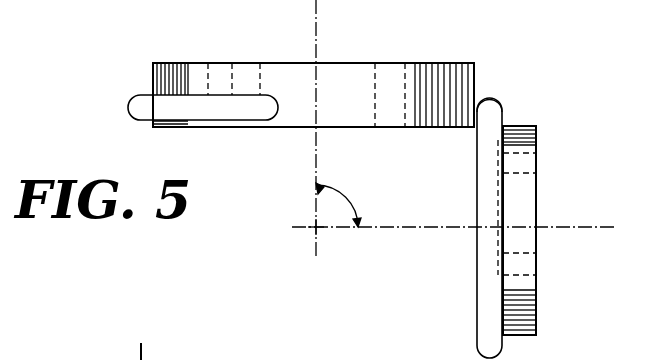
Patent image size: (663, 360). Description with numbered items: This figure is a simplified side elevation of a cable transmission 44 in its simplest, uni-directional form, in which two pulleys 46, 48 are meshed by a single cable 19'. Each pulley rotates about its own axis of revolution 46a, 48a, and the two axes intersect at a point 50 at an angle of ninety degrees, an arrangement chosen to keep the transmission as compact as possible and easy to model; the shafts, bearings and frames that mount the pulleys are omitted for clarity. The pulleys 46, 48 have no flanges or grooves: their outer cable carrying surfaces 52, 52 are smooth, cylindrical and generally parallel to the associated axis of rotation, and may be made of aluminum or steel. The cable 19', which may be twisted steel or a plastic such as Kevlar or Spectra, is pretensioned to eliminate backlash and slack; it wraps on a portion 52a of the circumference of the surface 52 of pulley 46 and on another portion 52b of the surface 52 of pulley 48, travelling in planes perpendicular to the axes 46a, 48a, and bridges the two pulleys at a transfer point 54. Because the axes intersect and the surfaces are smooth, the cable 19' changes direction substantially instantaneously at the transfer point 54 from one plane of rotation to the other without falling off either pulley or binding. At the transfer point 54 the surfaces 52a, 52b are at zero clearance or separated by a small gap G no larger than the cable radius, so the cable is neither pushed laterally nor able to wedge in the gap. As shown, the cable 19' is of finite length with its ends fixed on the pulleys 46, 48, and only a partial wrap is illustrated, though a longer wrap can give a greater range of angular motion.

The transmission 44 is at (538, 73).
The pulley 46 is at (540, 208).
The axis of revolution 46a is at (585, 213).
The pulley 48 is at (240, 62).
The axis of revolution 48a is at (320, 43).
The point 50 is at (315, 232).
The outer cable carrying surface 52 is at (300, 88).
The portion of the circumference of the surface 52a is at (522, 158).
The portion of the circumference of the surface 52b is at (198, 82).
The transfer point 54 is at (484, 102).
The cable 19' is at (328, 215).
The gap G is at (470, 129).